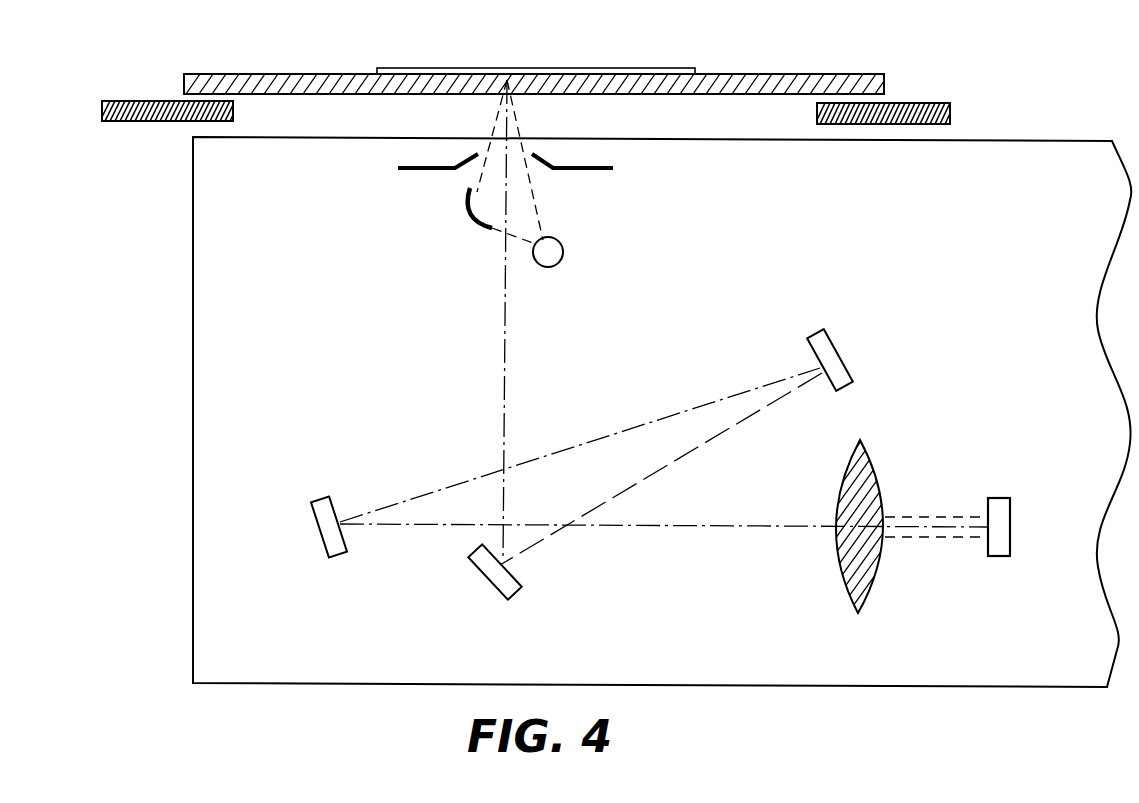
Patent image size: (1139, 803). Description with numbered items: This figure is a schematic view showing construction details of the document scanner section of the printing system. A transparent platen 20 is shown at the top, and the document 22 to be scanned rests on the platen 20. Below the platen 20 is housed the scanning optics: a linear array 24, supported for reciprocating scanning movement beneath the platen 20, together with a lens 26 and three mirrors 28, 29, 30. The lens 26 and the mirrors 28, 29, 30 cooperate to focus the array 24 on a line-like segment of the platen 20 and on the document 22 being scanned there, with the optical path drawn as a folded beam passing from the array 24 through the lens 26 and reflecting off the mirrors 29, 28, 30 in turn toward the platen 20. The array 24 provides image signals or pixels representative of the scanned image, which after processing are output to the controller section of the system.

The transparent platen 20 is at (298, 95).
The document 22 is at (590, 68).
The linear array 24 is at (1000, 498).
The lens 26 is at (872, 585).
The mirror 28 is at (500, 590).
The mirror 29 is at (840, 352).
The mirror 30 is at (322, 540).